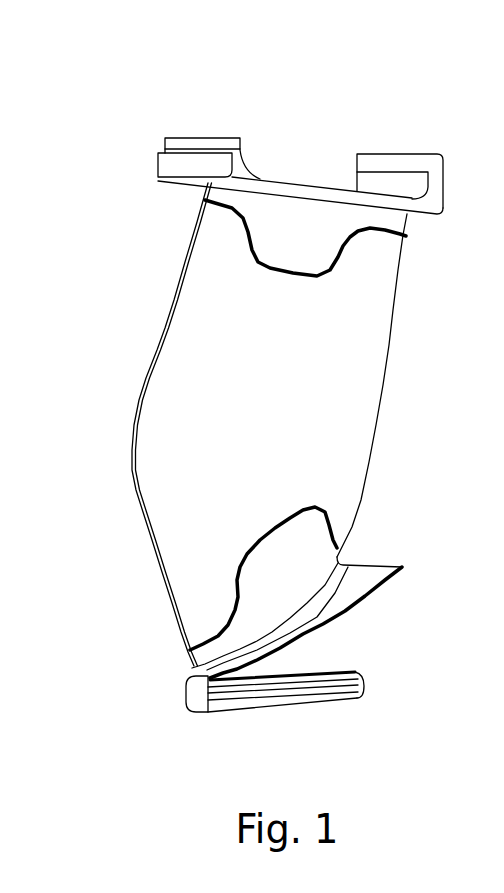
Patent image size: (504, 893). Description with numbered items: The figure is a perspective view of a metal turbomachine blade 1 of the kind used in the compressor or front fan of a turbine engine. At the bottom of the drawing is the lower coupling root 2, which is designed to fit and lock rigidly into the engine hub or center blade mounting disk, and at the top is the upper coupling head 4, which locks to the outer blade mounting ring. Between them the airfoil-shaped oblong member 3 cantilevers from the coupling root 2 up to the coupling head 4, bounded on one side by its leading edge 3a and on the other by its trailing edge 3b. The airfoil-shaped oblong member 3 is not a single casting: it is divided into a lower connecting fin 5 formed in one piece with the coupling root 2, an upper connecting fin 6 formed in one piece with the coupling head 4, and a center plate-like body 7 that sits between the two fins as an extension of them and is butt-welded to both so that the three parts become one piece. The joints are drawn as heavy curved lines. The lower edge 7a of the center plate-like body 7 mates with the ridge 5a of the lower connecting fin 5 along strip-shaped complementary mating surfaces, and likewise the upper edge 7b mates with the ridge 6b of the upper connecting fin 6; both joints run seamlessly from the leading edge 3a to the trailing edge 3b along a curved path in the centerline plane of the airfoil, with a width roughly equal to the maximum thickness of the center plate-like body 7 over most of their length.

The turbomachine blade 1 is at (410, 658).
The lower coupling root 2 is at (308, 672).
The airfoil-shaped oblong member 3 is at (162, 437).
The leading edge 3a is at (147, 358).
The trailing edge 3b is at (388, 345).
The upper coupling head 4 is at (315, 180).
The lower connecting fin 5 is at (290, 583).
The ridge of lower connecting fin 5a is at (288, 515).
The upper connecting fin 6 is at (303, 242).
The ridge of upper connecting fin 6b is at (268, 270).
The center plate-like body 7 is at (325, 383).
The lower edge of center plate-like body 7a is at (298, 522).
The upper edge of center plate-like body 7b is at (249, 220).